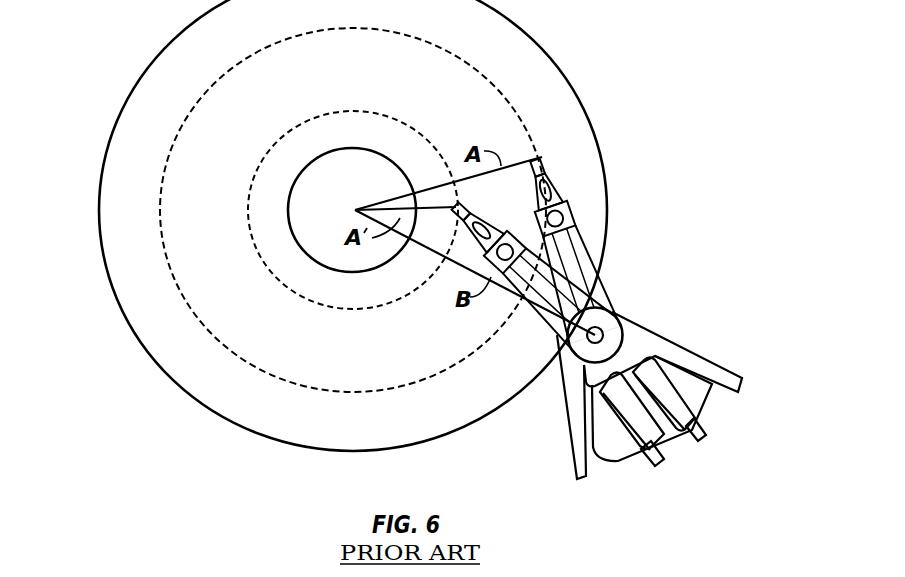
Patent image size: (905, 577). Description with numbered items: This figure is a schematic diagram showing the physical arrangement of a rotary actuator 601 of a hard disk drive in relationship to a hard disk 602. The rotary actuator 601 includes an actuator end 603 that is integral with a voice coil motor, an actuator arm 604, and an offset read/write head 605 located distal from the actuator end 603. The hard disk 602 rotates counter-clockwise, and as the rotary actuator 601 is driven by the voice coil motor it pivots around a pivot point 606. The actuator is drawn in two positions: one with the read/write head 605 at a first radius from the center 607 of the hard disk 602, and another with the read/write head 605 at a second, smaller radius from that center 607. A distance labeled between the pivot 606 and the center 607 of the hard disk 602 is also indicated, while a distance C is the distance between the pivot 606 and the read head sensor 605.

The rotary actuator 601 is at (703, 327).
The hard disk 602 is at (98, 203).
The actuator end 603 is at (722, 427).
The actuator arm 604 is at (612, 260).
The read/write head 605 is at (540, 152).
The pivot point 606 is at (597, 333).
The center of the hard disk 607 is at (356, 209).
The distance C is at (563, 223).